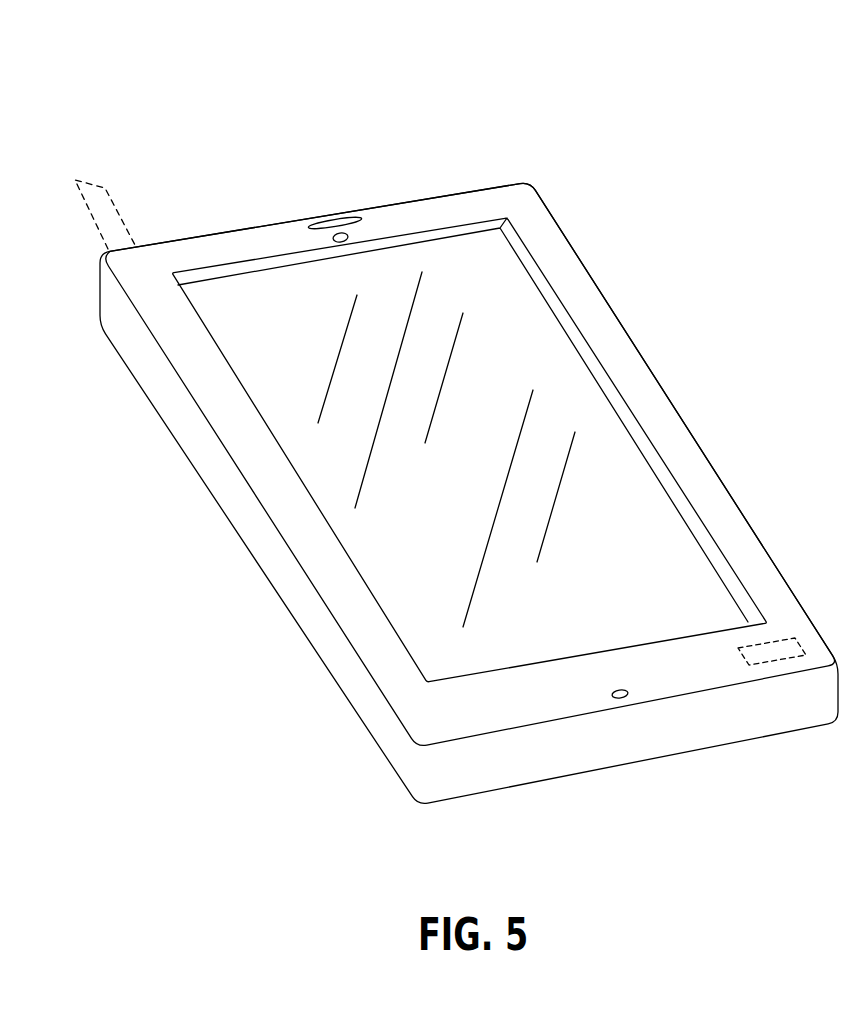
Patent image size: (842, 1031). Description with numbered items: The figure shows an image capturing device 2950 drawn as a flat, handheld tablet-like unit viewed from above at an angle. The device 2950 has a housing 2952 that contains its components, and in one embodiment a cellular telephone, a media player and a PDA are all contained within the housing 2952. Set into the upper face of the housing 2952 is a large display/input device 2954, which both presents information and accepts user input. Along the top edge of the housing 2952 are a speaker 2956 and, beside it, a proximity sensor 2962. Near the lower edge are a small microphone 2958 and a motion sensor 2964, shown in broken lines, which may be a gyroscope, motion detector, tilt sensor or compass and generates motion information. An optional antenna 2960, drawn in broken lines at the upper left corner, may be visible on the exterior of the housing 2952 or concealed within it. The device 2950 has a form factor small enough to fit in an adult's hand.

The image capturing device 2950 is at (456, 443).
The housing 2952 is at (595, 278).
The display/input device 2954 is at (492, 423).
The speaker 2956 is at (335, 219).
The microphone 2958 is at (620, 698).
The antenna 2960 is at (87, 178).
The proximity sensor 2962 is at (348, 237).
The motion sensor 2964 is at (790, 663).